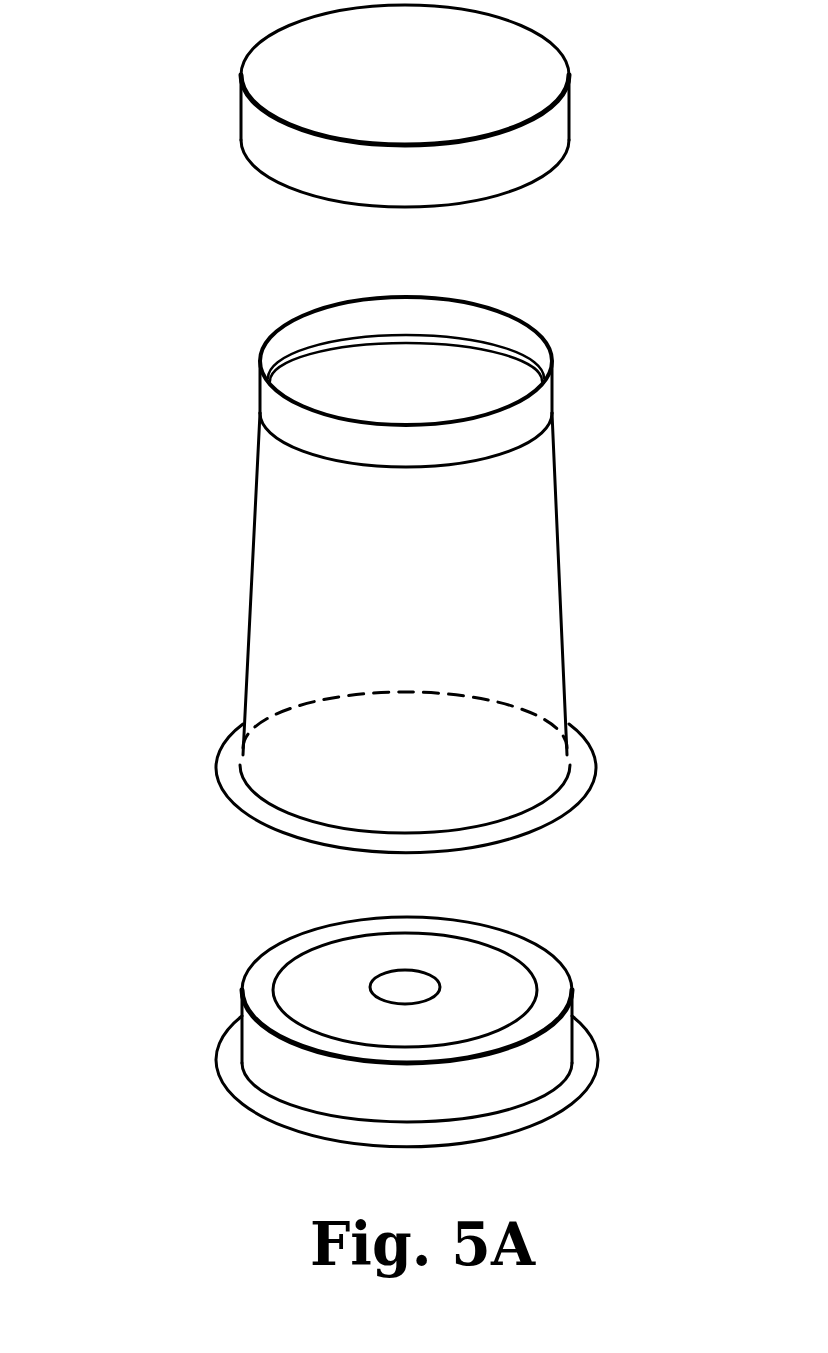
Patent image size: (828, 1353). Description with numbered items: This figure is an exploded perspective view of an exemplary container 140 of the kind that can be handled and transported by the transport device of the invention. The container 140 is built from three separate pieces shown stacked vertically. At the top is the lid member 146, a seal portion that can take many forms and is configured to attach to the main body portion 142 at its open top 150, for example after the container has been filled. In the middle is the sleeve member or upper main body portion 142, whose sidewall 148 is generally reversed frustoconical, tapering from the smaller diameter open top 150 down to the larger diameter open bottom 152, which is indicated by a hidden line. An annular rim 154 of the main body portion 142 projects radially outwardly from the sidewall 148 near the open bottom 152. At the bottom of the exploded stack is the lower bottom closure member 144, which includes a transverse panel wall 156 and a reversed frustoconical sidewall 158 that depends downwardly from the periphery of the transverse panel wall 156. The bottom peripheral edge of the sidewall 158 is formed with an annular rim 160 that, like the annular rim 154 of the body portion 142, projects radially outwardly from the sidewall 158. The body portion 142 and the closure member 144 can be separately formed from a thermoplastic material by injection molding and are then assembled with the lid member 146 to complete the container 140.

The container 140 is at (66, 467).
The main body portion 142 is at (393, 560).
The closure member 144 is at (371, 1028).
The lid member 146 is at (210, 101).
The sidewall 148 is at (525, 598).
The open top 150 is at (500, 338).
The open bottom 152 is at (556, 718).
The annular rim 154 is at (578, 775).
The transverse panel wall 156 is at (500, 970).
The sidewall 158 is at (555, 1042).
The annular rim 160 is at (563, 1095).